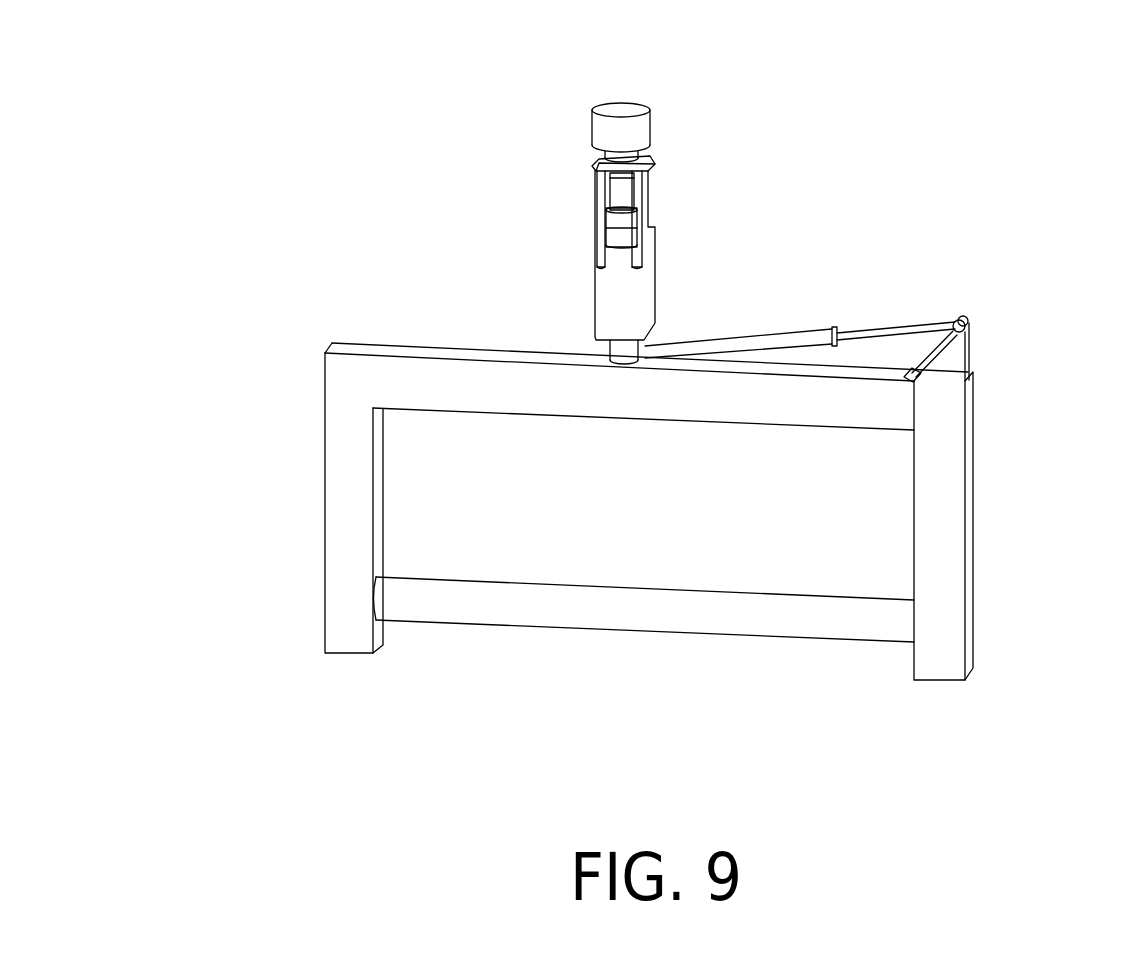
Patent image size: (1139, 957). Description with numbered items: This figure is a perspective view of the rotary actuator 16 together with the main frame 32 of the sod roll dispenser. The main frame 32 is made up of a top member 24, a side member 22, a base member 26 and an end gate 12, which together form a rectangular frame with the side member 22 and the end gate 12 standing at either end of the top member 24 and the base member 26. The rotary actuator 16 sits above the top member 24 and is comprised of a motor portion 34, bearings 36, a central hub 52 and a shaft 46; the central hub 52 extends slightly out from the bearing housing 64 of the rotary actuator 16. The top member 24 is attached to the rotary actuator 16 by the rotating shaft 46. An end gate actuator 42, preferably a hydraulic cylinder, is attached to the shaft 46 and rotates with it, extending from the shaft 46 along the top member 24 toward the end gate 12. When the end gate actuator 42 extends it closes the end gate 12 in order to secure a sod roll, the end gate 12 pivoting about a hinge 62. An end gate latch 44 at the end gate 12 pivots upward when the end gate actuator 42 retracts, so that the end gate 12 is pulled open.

The end gate 12 is at (934, 537).
The rotary actuator 16 is at (690, 235).
The side member 22 is at (348, 482).
The top member 24 is at (658, 402).
The base member 26 is at (735, 613).
The main frame 32 is at (323, 303).
The motor portion 34 is at (618, 137).
The bearings 36 is at (620, 218).
The end gate actuator 42 is at (790, 338).
The end gate latch 44 is at (947, 372).
The shaft 46 is at (620, 353).
The central hub 52 is at (618, 307).
The hinge 62 is at (915, 372).
The bearing housing 64 is at (597, 162).